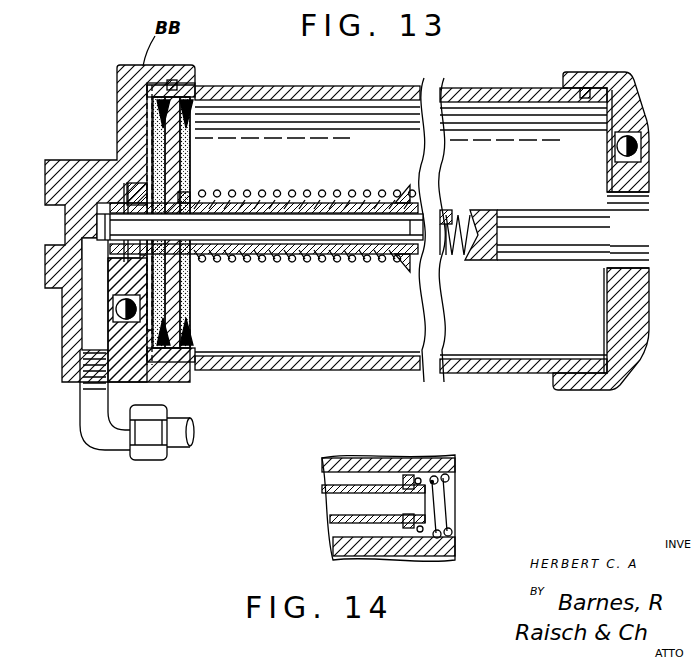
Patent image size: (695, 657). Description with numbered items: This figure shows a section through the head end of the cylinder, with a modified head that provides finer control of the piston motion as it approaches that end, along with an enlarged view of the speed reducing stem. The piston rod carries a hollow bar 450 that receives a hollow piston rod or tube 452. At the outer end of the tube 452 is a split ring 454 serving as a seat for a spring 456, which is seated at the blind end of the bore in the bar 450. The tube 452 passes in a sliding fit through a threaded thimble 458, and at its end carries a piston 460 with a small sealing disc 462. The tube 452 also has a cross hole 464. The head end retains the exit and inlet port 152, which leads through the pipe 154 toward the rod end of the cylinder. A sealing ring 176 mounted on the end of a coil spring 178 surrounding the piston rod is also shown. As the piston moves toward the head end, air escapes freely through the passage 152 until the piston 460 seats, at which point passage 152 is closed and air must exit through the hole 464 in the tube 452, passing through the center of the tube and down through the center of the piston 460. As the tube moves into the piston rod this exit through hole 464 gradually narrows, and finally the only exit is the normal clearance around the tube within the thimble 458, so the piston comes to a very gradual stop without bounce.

In FIG. 13, the passage 152 is at (92, 326).
In FIG. 13, the pipe 154 is at (190, 432).
In FIG. 13, the sealing ring 176 is at (400, 200).
In FIG. 13, the coil spring 178 is at (262, 232).
In FIG. 13, the hollow bar 450 is at (253, 222).
In FIG. 14, the hollow bar 450 is at (340, 473).
In FIG. 13, the hollow piston rod or tube 452 is at (322, 224).
In FIG. 14, the hollow piston rod or tube 452 is at (325, 497).
In FIG. 13, the split ring 454 is at (403, 262).
In FIG. 14, the split ring 454 is at (407, 472).
In FIG. 13, the spring 456 is at (453, 212).
In FIG. 14, the spring 456 is at (457, 492).
In FIG. 13, the threaded thimble 458 is at (192, 203).
In FIG. 13, the piston 460 is at (128, 190).
In FIG. 13, the sealing disc 462 is at (118, 212).
In FIG. 13, the cross hole 464 is at (268, 233).